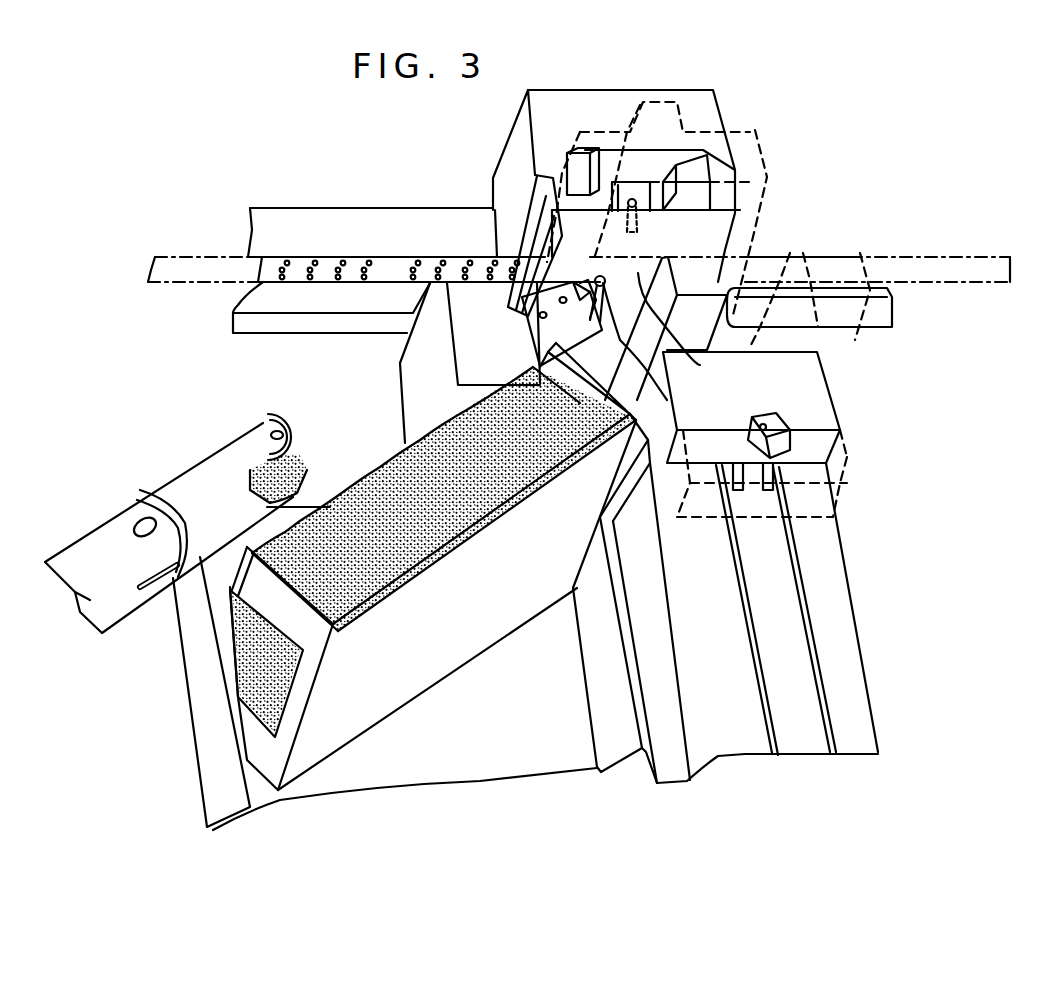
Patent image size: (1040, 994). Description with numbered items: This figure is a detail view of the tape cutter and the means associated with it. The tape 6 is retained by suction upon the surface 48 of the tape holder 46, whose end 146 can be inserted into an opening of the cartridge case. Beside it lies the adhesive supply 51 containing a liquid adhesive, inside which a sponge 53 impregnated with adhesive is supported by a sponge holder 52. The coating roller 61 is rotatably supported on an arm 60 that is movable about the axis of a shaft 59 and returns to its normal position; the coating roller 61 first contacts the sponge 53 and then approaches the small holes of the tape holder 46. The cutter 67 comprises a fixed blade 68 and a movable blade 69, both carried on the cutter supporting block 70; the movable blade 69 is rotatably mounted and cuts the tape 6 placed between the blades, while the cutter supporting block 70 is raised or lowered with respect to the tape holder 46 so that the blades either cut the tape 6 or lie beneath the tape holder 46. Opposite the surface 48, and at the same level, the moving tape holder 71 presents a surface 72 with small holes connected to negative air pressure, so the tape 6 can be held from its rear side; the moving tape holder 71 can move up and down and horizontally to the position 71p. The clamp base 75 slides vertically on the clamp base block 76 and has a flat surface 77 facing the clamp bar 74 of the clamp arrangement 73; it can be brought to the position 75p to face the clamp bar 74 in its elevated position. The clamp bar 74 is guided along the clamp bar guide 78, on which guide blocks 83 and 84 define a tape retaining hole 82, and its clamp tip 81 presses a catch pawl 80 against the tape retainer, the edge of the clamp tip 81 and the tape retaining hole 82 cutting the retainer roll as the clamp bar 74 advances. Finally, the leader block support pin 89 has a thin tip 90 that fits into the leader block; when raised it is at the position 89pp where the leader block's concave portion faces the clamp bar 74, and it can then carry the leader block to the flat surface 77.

The tape 6 is at (190, 262).
The tape holder 46 is at (278, 222).
The end of the tape holder 146 is at (345, 222).
The surface 48 is at (392, 265).
The adhesive supply 51 is at (353, 780).
The sponge holder 52 is at (400, 687).
The sponge 53 is at (433, 513).
The shaft 59 is at (137, 523).
The arm 60 is at (185, 463).
The coating roller 61 is at (260, 410).
The cutter 67 is at (513, 210).
The fixed blade 68 is at (523, 198).
The movable blade 69 is at (548, 343).
The cutter supporting block 70 is at (417, 378).
The moving tape holder 71 is at (720, 280).
The position of the moving tape holder 71p is at (840, 273).
The surface 72 is at (665, 350).
The clamp arrangement 73 is at (822, 423).
The clamp bar 74 is at (795, 650).
The clamp base 75 is at (720, 237).
The position of the clamp base 75p is at (760, 150).
The clamp base block 76 is at (647, 95).
The flat surface 77 is at (707, 350).
The clamp bar guide 78 is at (855, 702).
The catch pawl 80 is at (723, 463).
The clamp tip 81 is at (760, 483).
The tape retaining hole 82 is at (767, 418).
The guide block 83 is at (807, 365).
The guide block 84 is at (843, 460).
The leader block support pin 89 is at (582, 353).
The raised position of the leader block support pin 89pp is at (637, 232).
The thin tip 90 is at (660, 367).